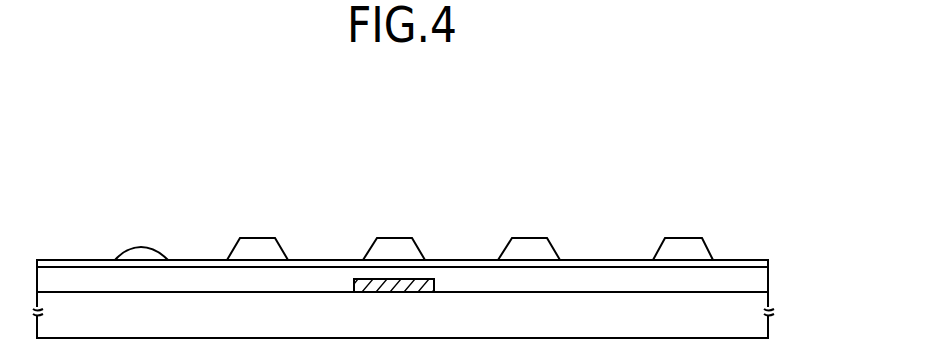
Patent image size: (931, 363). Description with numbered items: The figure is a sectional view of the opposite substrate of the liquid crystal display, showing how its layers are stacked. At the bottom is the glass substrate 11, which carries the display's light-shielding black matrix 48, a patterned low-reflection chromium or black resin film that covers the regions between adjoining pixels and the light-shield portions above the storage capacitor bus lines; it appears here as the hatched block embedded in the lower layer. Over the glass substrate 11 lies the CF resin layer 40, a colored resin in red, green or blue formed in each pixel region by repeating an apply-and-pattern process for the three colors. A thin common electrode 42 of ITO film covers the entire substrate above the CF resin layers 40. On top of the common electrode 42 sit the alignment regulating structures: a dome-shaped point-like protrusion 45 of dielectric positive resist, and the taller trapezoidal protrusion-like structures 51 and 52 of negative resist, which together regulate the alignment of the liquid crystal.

The glass substrate 11 is at (770, 326).
The CF resin layer 40 is at (770, 291).
The common electrode 42 is at (772, 261).
The point-like protrusion 45 is at (148, 251).
The black matrix 48 is at (404, 293).
The protrusion-like structure 51 is at (394, 239).
The protrusion-like structure 52 is at (258, 239).